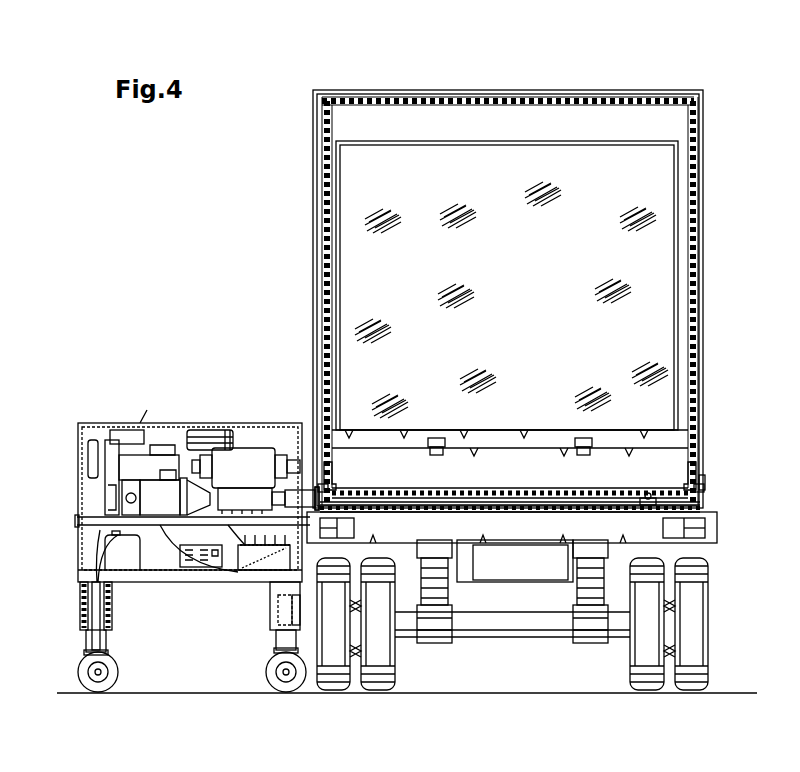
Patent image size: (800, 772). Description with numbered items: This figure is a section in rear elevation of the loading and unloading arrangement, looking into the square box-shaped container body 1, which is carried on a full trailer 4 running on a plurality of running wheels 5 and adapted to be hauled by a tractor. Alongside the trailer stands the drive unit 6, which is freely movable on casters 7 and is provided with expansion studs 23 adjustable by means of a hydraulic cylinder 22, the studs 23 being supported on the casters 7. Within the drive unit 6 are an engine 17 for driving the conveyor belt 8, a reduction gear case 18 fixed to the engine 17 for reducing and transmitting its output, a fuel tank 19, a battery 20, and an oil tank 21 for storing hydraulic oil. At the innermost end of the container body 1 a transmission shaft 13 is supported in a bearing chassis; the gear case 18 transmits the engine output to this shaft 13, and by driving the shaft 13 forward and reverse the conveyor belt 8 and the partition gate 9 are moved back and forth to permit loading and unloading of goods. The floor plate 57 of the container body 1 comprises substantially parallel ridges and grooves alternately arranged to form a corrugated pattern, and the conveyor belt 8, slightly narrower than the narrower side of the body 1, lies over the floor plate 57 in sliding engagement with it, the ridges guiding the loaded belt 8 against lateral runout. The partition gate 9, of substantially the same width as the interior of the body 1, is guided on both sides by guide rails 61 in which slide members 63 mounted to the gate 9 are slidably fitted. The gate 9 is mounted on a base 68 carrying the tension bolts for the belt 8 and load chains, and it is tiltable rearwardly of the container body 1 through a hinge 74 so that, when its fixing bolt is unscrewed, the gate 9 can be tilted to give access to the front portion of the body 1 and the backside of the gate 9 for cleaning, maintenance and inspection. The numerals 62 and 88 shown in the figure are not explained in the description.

The container body 1 is at (705, 233).
The full trailer 4 is at (720, 527).
The running wheels 5 is at (380, 665).
The drive unit 6 is at (78, 456).
The casters 7 is at (115, 688).
The conveyor belt 8 is at (537, 505).
The partition gate 9 is at (667, 190).
The transmission shaft 13 is at (470, 502).
The engine 17 is at (118, 442).
The reduction gear case 18 is at (248, 452).
The fuel tank 19 is at (212, 432).
The battery 20 is at (245, 553).
The oil tank 21 is at (127, 560).
The hydraulic cylinder 22 is at (95, 612).
The expansion studs 23 is at (85, 640).
The floor plate 57 is at (648, 498).
The guide rails 61 is at (318, 462).
The clip 62 is at (333, 470).
The slide members 63 is at (330, 487).
The base 68 is at (520, 458).
The hinge 74 is at (436, 438).
The side wall insulation 88 is at (715, 300).